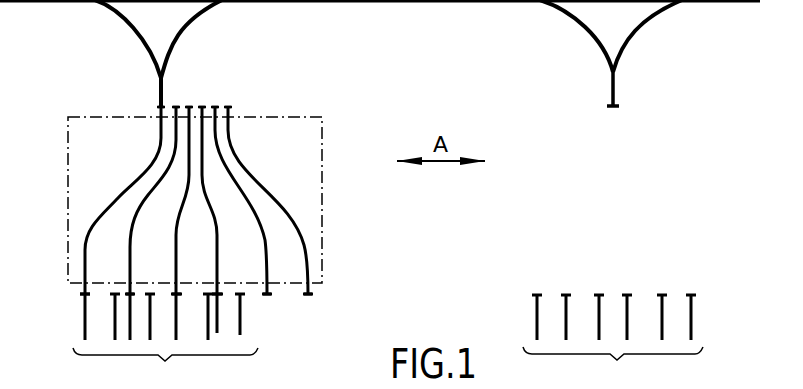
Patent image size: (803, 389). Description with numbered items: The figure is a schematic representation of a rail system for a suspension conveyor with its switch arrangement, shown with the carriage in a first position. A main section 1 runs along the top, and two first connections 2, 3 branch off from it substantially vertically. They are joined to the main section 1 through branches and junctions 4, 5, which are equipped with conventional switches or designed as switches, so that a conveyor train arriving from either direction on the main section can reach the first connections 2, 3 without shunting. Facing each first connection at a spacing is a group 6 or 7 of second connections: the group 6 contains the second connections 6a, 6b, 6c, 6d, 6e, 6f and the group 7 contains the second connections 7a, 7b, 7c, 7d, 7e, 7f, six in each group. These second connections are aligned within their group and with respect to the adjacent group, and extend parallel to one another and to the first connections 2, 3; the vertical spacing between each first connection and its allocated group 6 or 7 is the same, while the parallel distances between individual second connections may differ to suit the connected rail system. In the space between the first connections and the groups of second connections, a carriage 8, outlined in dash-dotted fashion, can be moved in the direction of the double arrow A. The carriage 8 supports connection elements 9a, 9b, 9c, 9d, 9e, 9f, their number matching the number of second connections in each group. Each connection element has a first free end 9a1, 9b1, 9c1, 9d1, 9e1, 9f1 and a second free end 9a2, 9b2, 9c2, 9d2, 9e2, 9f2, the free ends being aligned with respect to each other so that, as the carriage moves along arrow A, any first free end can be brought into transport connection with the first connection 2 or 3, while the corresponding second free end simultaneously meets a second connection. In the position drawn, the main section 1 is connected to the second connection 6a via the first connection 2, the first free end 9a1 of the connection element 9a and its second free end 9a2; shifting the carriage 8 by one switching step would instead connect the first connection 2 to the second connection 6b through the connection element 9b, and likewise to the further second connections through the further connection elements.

The main section 1 is at (441, 1).
The first connection 2 is at (160, 82).
The first connection 3 is at (612, 98).
The branch and junction 4 is at (123, 15).
The branch and junction 5 is at (200, 17).
The group of second connections 6 is at (165, 368).
The second connection 6a is at (85, 333).
The second connection 6b is at (115, 323).
The second connection 6c is at (150, 325).
The second connection 6d is at (176, 327).
The second connection 6e is at (208, 327).
The second connection 6f is at (240, 325).
The group of second connections 7 is at (613, 367).
The second connection 7a is at (536, 312).
The second connection 7b is at (565, 312).
The second connection 7c is at (598, 312).
The second connection 7d is at (626, 312).
The second connection 7e is at (661, 312).
The second connection 7f is at (690, 312).
The carriage 8 is at (56, 124).
The connection element 9a is at (134, 186).
The connection element 9b is at (130, 238).
The connection element 9c is at (175, 240).
The connection element 9d is at (217, 238).
The connection element 9e is at (262, 242).
The connection element 9f is at (303, 242).
The first free end 9a1 is at (157, 108).
The first free end 9b1 is at (176, 107).
The first free end 9c1 is at (190, 107).
The first free end 9d1 is at (203, 107).
The first free end 9e1 is at (216, 107).
The first free end 9f1 is at (229, 109).
The second free end 9a2 is at (84, 295).
The second free end 9b2 is at (130, 294).
The second free end 9c2 is at (177, 294).
The second free end 9d2 is at (218, 294).
The second free end 9e2 is at (268, 294).
The second free end 9f2 is at (310, 294).